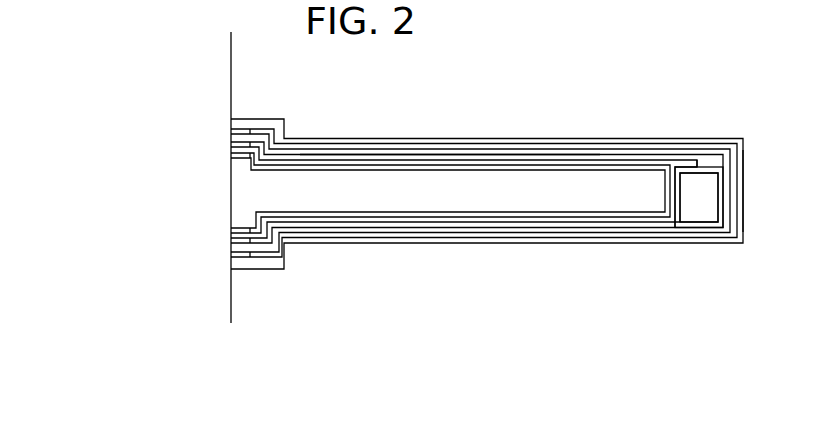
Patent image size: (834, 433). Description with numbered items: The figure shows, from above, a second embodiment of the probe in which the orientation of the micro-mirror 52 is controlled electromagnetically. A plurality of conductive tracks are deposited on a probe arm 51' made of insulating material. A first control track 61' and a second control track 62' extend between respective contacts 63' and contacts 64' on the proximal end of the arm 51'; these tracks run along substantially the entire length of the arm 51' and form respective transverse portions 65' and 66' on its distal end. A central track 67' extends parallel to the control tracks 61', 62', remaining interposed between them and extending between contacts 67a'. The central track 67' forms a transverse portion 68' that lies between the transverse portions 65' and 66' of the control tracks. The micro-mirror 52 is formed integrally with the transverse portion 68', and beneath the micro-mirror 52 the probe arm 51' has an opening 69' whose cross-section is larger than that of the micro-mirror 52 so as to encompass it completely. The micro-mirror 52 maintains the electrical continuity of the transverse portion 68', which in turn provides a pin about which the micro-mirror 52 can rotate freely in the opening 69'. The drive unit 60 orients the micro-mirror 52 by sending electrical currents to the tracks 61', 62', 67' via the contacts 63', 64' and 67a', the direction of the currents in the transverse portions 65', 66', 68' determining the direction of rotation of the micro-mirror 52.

The drive unit 60 is at (236, 302).
The probe arm 51' is at (487, 212).
The first control track 61' is at (484, 214).
The second control track 62' is at (477, 219).
The transverse portion 66' is at (462, 224).
The transverse portion 68' is at (719, 228).
The micro-mirror 52 is at (716, 204).
The transverse portion 65' is at (781, 191).
The opening 69' is at (750, 135).
The central track 67' is at (450, 111).
The contacts 63' is at (195, 189).
The contacts 67a' is at (175, 197).
The contacts 64' is at (191, 191).